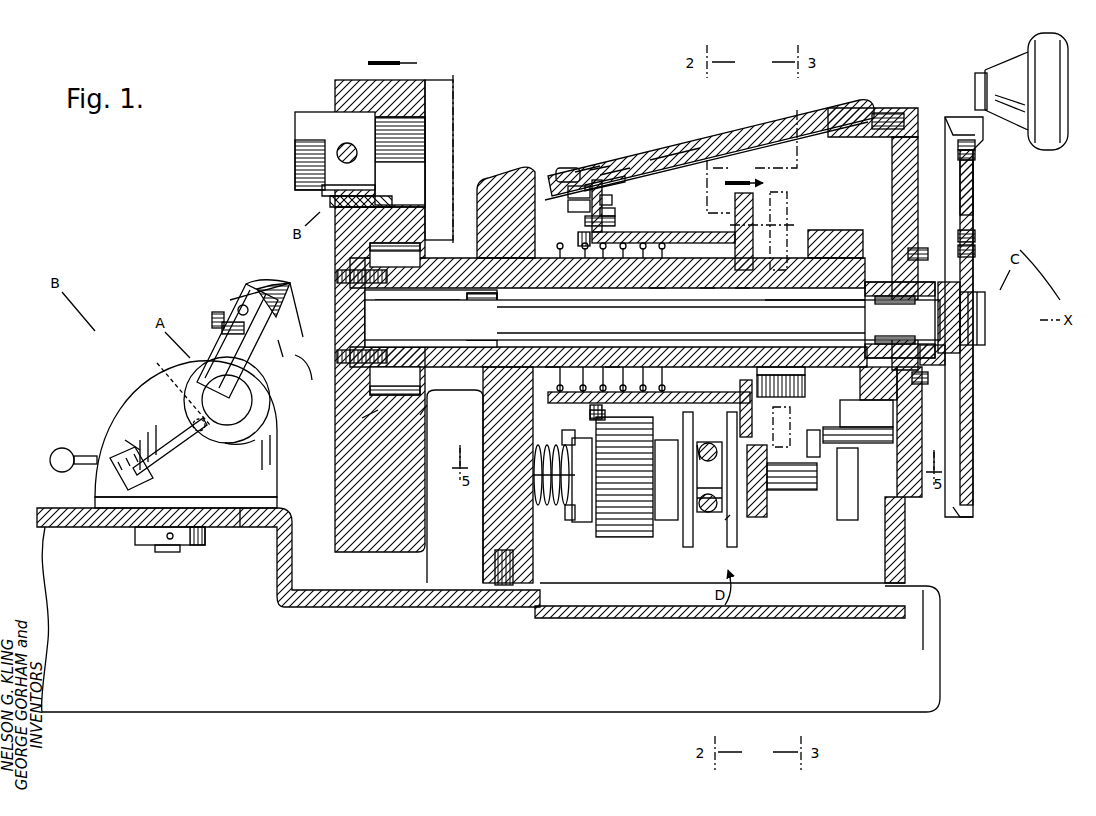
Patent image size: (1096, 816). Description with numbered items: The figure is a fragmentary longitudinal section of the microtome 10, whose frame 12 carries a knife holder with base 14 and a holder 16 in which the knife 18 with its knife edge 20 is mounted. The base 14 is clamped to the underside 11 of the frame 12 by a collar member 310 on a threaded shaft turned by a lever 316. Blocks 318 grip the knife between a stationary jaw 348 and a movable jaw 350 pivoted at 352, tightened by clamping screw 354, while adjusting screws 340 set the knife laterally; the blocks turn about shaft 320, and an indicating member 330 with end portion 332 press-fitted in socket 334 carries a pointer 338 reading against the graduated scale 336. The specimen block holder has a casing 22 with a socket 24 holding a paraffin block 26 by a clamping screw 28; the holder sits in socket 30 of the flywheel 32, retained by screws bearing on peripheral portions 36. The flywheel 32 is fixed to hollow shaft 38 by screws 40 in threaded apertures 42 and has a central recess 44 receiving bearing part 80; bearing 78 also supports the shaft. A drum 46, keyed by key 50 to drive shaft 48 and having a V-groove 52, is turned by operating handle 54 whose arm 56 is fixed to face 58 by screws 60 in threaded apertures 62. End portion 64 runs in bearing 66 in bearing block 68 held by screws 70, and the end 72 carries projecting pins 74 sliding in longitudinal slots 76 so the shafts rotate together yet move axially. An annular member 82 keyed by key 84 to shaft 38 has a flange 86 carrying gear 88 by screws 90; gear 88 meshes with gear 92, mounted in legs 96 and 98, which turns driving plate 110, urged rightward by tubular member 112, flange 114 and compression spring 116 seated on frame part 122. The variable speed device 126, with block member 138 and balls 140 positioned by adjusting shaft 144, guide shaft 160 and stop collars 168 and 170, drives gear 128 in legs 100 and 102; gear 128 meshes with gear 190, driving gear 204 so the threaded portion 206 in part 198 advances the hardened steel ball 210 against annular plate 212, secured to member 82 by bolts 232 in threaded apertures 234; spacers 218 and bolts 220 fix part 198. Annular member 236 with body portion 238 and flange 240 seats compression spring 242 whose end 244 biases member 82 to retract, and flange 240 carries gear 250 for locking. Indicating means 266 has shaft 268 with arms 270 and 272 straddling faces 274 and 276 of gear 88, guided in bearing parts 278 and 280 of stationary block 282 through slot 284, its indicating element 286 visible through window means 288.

The microtome 10 is at (938, 535).
The underside of the frame 11 is at (245, 528).
The frame 12 is at (352, 609).
The main frame or base 14 is at (140, 417).
The holder 16 is at (212, 348).
The knife 18 is at (243, 305).
The knife edge 20 is at (288, 280).
The casing 22 is at (345, 80).
The socket 24 is at (322, 195).
The paraffin block 26 is at (305, 125).
The clamping screw 28 is at (337, 144).
The socket of the flywheel 30 is at (345, 207).
The flywheel 32 is at (447, 78).
The peripheral portions of the holder 36 is at (430, 195).
The hollow shaft 38 is at (590, 326).
The screws 40 is at (337, 276).
The threaded apertures 42 is at (378, 255).
The central recess 44 is at (372, 422).
The drum 46 is at (975, 462).
The drive shaft 48 is at (806, 326).
The key 50 is at (985, 320).
The V-groove 52 is at (965, 517).
The operating handle 54 is at (1060, 143).
The arm 56 is at (985, 132).
The face of drum 58 is at (975, 255).
The screws 60 is at (978, 155).
The threaded apertures 62 is at (965, 225).
The end portion of shaft 64 is at (868, 328).
The bearing 66 is at (920, 305).
The bearing block 68 is at (945, 357).
The screws 70 is at (930, 378).
The end of shaft 72 is at (470, 294).
The projecting pins 74 is at (489, 262).
The longitudinal slots 76 is at (418, 332).
The bearing 78 is at (855, 376).
The bearing part 80 is at (420, 418).
The annular member 82 is at (735, 226).
The key 84 is at (706, 288).
The annular flange 86 is at (615, 222).
The gear 88 is at (612, 200).
The screws 90 is at (578, 240).
The gear 92 is at (622, 540).
The leg 96 is at (582, 525).
The leg 98 is at (665, 522).
The leg 100 is at (757, 518).
The leg 102 is at (848, 522).
The driving plate 110 is at (684, 540).
The tubular member 112 is at (560, 508).
The annular flange portion 114 is at (567, 522).
The compression spring 116 is at (535, 472).
The part of frame 122 is at (493, 562).
The variable speed device 126 is at (737, 522).
The gear 128 is at (800, 492).
The block member 138 is at (697, 494).
The balls 140 is at (697, 472).
The adjusting shaft 144 is at (709, 443).
The guide shaft 160 is at (708, 513).
The stop collar 168 is at (697, 456).
The stop collar 170 is at (725, 525).
The gear 190 is at (785, 440).
The part 198 is at (812, 460).
The gear 204 is at (858, 418).
The threaded portion 206 is at (772, 368).
The hardened steel ball 210 is at (760, 375).
The annular plate 212 is at (785, 196).
The spacers 218 is at (870, 445).
The bolts 220 is at (760, 395).
The bolts 232 is at (656, 288).
The threaded apertures 234 is at (741, 288).
The annular member 236 is at (552, 368).
The body portion 238 is at (553, 403).
The annular flange 240 is at (515, 238).
The compression spring 242 is at (614, 366).
The opposite end of spring 244 is at (673, 232).
The gear 250 is at (520, 420).
The indicating means 266 is at (598, 158).
The shaft 268 is at (630, 158).
The projecting arm 270 is at (568, 191).
The projecting arm 272 is at (604, 190).
The face of gear 274 is at (568, 208).
The face of gear 276 is at (615, 213).
The bearing part 278 is at (560, 170).
The bearing part 280 is at (665, 150).
The stationary block 282 is at (602, 178).
The slot 284 is at (670, 160).
The indicating element 286 is at (592, 158).
The window means 288 is at (612, 165).
The collar member 310 is at (140, 540).
The lever 316 is at (50, 459).
The blocks 318 is at (245, 445).
The shaft 320 is at (268, 420).
The indicating member 330 is at (176, 433).
The end portion 332 is at (198, 433).
The socket 334 is at (157, 363).
The graduated scale 336 is at (112, 471).
The pointer 338 is at (130, 445).
The adjusting screws 340 is at (220, 405).
The stationary jaw 348 is at (283, 357).
The movable jaw 350 is at (270, 288).
The pivot 352 is at (218, 310).
The set or clamping screw 354 is at (225, 322).